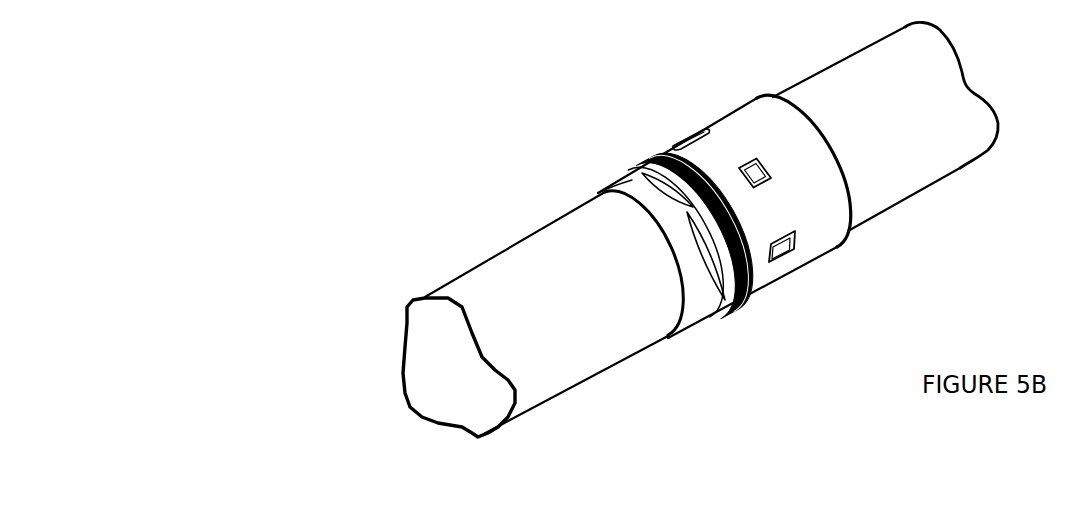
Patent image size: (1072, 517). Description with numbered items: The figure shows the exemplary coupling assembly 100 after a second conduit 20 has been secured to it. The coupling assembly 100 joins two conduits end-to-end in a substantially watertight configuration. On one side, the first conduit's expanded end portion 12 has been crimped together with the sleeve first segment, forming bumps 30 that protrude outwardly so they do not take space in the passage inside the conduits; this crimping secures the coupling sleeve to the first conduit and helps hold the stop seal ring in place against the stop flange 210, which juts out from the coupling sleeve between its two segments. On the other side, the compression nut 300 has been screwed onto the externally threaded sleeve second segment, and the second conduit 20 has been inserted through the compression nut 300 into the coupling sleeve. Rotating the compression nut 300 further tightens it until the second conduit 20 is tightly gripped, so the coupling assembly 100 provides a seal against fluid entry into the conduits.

The coupling assembly 100 is at (607, 218).
The second conduit 20 is at (448, 287).
The compression nut 300 is at (600, 152).
The stop flange 210 is at (783, 348).
The bumps 30 is at (780, 263).
The expanded end portion 12 is at (828, 245).